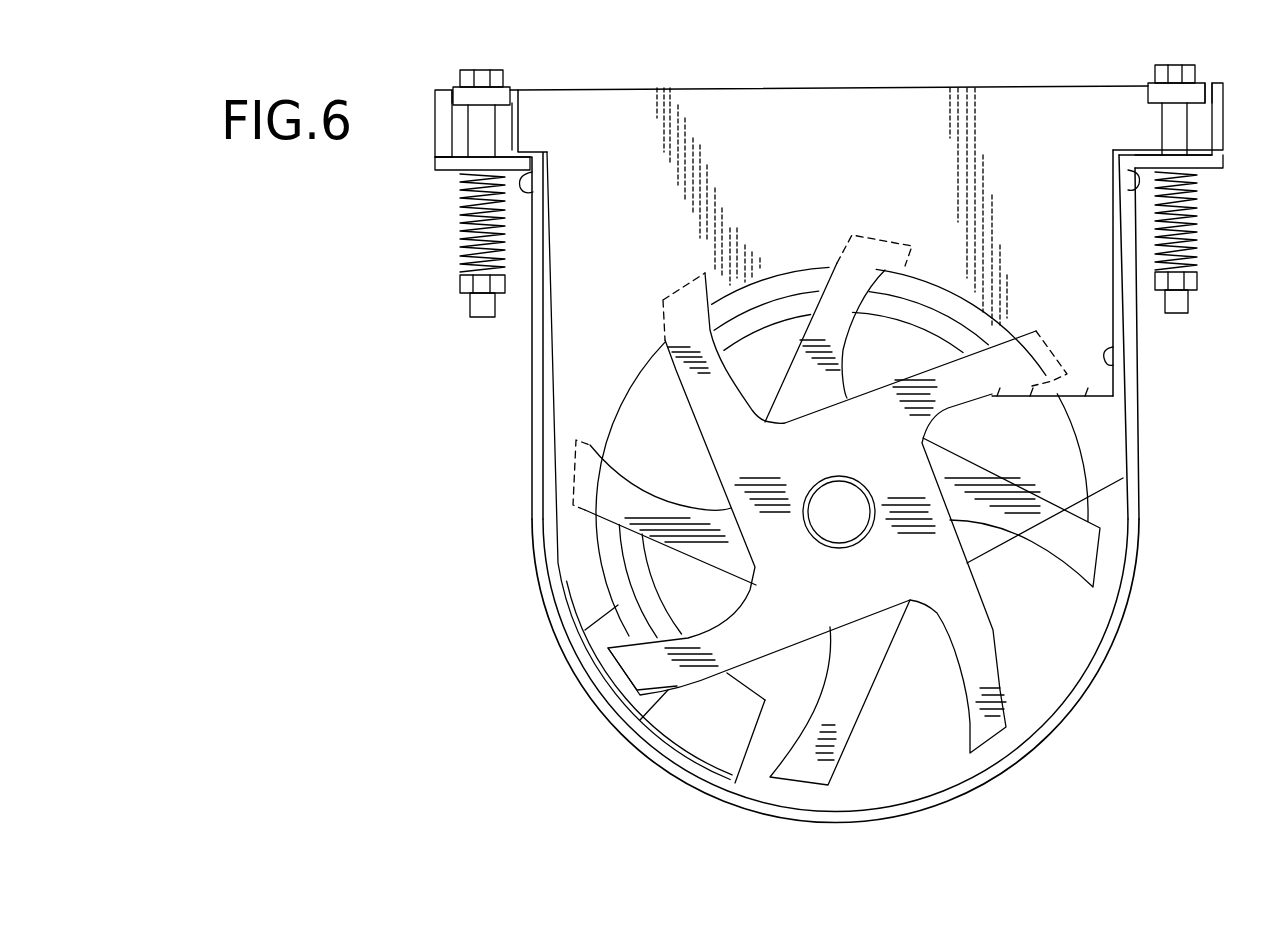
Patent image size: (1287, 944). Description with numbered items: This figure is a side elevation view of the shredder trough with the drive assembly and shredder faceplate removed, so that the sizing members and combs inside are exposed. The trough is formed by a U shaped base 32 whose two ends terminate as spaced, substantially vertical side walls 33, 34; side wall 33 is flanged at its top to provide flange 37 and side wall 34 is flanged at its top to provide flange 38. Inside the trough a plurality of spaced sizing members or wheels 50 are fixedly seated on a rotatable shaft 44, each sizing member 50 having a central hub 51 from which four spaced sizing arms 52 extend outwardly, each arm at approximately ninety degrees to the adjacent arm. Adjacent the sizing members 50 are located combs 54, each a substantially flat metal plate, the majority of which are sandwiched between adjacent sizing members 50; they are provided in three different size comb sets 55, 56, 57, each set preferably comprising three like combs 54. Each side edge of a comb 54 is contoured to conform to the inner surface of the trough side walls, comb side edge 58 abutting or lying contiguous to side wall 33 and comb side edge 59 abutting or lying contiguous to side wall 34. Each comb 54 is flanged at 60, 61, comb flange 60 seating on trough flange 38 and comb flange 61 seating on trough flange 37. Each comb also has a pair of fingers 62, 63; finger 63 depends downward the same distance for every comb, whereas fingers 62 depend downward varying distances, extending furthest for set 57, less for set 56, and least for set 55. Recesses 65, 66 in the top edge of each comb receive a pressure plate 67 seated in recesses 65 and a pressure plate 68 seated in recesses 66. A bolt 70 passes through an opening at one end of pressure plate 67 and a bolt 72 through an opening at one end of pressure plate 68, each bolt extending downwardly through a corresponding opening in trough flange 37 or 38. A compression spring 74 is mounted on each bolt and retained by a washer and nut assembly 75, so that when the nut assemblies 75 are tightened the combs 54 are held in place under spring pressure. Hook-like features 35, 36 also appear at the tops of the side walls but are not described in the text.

The U shaped base 32 is at (996, 770).
The trough side wall 33 is at (531, 404).
The trough side wall 34 is at (1137, 416).
The left hook flange 35 is at (532, 186).
The right hook flange 36 is at (1127, 186).
The trough flange 37 is at (450, 170).
The trough flange 38 is at (1202, 165).
The rotatable shaft 44 is at (855, 523).
The sizing member 50 is at (963, 600).
The central hub 51 is at (867, 464).
The sizing arm 52 is at (693, 412).
The comb 54 is at (829, 172).
The comb set 55 is at (570, 580).
The comb set 56 is at (604, 655).
The comb set 57 is at (702, 750).
The comb side edge 58 is at (557, 538).
The comb side edge 59 is at (1118, 358).
The comb flange 60 is at (1208, 138).
The comb flange 61 is at (450, 133).
The comb finger 62 is at (588, 608).
The comb finger 63 is at (999, 394).
The comb recess 65 is at (452, 92).
The comb recess 66 is at (1208, 90).
The pressure plate 67 is at (497, 103).
The pressure plate 68 is at (1157, 100).
The bolt 70 is at (492, 80).
The bolt 72 is at (1157, 72).
The compression spring 74 is at (463, 240).
The washer and nut assembly 75 is at (462, 292).